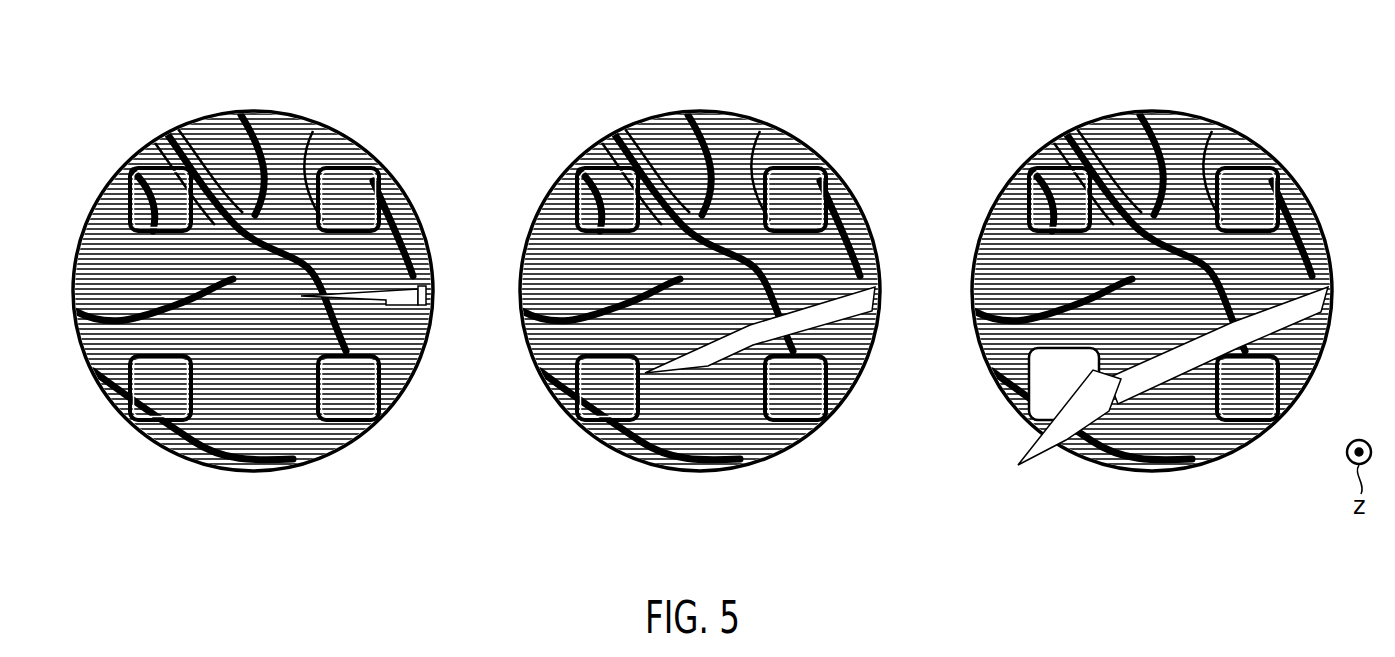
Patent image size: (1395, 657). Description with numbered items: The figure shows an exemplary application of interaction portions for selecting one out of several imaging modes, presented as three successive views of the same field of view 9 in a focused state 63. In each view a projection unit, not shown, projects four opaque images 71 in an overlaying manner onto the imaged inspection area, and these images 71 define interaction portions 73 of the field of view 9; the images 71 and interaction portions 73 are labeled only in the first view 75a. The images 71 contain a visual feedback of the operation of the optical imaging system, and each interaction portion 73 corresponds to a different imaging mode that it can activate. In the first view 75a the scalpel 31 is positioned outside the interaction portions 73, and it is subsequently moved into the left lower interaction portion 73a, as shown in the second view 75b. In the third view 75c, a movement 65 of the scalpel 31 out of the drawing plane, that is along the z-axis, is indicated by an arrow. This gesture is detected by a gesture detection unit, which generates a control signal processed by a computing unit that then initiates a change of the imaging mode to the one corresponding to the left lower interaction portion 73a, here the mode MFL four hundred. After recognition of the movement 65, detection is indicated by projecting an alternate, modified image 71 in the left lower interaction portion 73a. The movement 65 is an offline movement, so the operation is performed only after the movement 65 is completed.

The field of view 9 is at (702, 248).
The focused state 63 is at (243, 102).
The images 71 is at (684, 290).
The interaction portions 73 is at (121, 160).
The left lower interaction portion 73a is at (572, 410).
The first view 75a is at (297, 105).
The second view 75b is at (743, 104).
The third view 75c is at (1197, 105).
The scalpel 31 is at (418, 287).
The movement 65 is at (1058, 441).